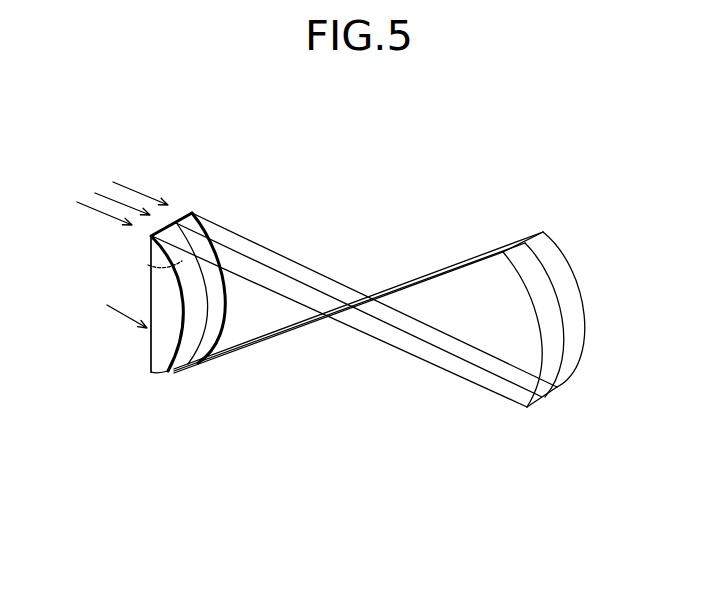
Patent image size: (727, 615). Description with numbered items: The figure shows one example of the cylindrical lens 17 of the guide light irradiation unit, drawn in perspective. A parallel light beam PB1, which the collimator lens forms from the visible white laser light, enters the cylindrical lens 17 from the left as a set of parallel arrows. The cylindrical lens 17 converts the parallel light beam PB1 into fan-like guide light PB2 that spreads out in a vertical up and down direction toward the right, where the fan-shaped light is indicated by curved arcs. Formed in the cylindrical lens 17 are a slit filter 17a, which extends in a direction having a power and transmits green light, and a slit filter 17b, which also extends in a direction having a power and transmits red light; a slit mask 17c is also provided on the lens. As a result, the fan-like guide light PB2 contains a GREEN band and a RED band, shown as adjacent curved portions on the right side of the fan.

The cylindrical lens 17 is at (162, 310).
The slit filter 17a is at (153, 258).
The slit filter 17b is at (213, 283).
The slit mask 17c is at (205, 225).
The parallel light beam PB1 is at (137, 190).
The fan-like guide light PB2 is at (268, 339).
The green light GREEN is at (537, 285).
The red light RED is at (570, 317).